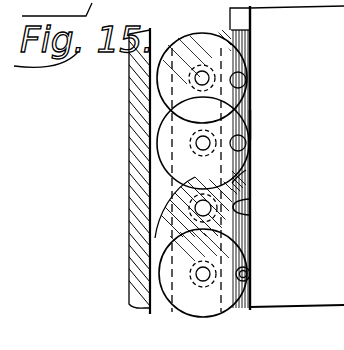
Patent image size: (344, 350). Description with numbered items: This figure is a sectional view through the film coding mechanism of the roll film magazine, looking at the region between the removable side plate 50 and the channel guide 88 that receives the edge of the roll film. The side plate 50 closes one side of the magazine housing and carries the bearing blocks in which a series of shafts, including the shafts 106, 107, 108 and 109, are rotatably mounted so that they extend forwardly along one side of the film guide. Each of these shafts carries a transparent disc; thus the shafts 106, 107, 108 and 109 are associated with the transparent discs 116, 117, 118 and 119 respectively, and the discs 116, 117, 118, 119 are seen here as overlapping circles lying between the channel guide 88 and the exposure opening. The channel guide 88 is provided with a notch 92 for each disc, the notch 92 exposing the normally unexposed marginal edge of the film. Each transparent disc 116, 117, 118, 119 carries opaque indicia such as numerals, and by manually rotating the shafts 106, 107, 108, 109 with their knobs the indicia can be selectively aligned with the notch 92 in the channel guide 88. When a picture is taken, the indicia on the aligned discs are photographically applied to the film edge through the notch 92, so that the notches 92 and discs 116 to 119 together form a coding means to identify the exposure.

The side plate 50 is at (141, 202).
The channel guide 88 is at (252, 171).
The notch 92 is at (252, 209).
The shaft 106 is at (251, 271).
The shaft 107 is at (168, 190).
The shaft 108 is at (197, 143).
The shaft 109 is at (197, 79).
The transparent disc 116 is at (165, 268).
The transparent disc 117 is at (165, 220).
The transparent disc 118 is at (252, 126).
The transparent disc 119 is at (250, 58).